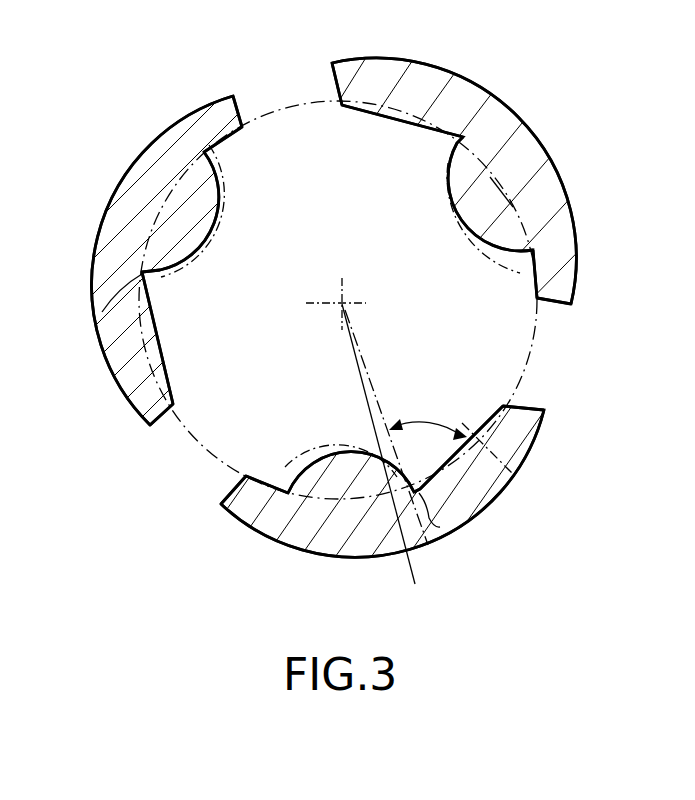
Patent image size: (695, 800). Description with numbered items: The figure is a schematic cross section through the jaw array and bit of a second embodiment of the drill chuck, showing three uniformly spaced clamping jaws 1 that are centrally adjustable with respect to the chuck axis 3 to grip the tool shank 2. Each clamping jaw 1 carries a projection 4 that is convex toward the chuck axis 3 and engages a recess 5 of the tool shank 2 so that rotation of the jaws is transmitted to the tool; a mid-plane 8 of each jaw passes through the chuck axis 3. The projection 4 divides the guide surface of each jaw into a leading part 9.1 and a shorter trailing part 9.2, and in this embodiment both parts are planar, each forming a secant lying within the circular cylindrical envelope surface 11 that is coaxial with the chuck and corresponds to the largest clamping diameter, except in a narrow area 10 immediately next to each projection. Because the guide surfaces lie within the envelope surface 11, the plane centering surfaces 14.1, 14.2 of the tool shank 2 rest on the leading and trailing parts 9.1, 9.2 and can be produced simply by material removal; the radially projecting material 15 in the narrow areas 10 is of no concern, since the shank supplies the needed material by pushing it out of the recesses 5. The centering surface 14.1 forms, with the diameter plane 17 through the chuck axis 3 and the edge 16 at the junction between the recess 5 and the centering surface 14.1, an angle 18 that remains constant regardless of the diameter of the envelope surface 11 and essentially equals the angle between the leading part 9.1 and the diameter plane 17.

The clamping jaw 1 is at (517, 133).
The tool shank 2 is at (210, 407).
The chuck axis 3 is at (340, 307).
The projection 4 is at (453, 185).
The recess 5 is at (483, 253).
The mid-plane 8 is at (417, 572).
The leading part 9.1 is at (387, 120).
The trailing part 9.2 is at (242, 137).
The narrow area 10 is at (457, 121).
The envelope surface 11 is at (392, 102).
The centering surface 14.1 is at (374, 103).
The centering surface 14.2 is at (229, 124).
The radially projecting portion of material 15 is at (150, 283).
The edge 16 is at (453, 535).
The diameter plane 17 is at (360, 338).
The angle 18 is at (427, 423).